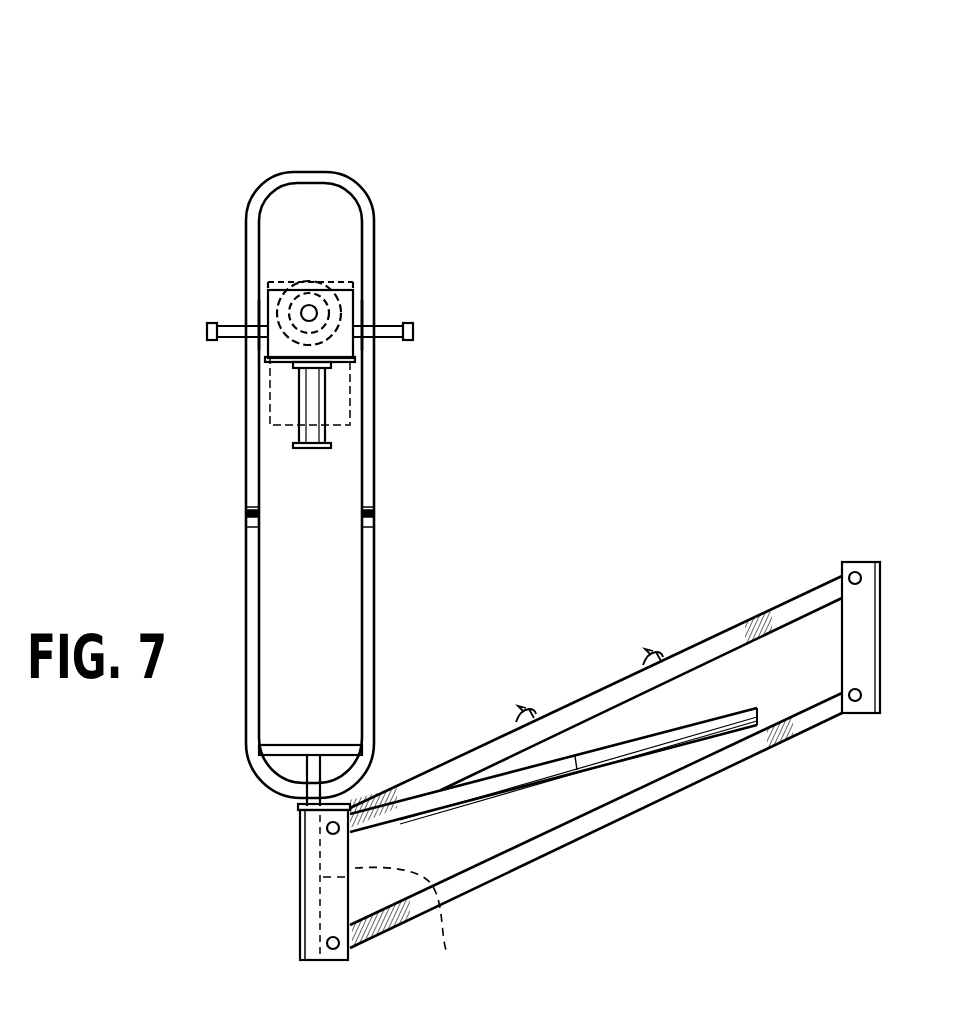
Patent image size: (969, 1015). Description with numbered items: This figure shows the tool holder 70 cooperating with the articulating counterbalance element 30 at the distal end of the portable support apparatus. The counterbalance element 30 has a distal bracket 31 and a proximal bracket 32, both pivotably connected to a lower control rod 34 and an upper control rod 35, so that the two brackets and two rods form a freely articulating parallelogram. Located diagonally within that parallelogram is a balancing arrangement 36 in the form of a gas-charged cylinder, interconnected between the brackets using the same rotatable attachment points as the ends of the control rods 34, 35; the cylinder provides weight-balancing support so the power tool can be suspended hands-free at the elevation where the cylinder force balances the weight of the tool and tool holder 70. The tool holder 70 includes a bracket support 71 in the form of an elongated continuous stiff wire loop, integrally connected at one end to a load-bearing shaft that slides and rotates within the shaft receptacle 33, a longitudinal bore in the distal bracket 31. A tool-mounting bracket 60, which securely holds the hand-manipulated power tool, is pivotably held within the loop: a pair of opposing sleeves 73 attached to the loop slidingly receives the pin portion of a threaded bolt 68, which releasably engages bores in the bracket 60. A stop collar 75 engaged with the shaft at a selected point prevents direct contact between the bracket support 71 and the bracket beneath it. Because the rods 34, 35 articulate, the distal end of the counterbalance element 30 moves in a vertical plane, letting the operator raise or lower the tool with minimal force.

The tool holder 70 is at (328, 143).
The bracket support 71 is at (358, 187).
The tool-mounting bracket 60 is at (272, 441).
The threaded bolt 68 is at (393, 323).
The opposing sleeves 73 is at (377, 350).
The stop collar 75 is at (297, 812).
The distal bracket 31 is at (297, 887).
The shaft receptacle 33 is at (448, 955).
The proximal bracket 32 is at (878, 627).
The upper control rod 35 is at (778, 613).
The counterbalance element 30 is at (615, 664).
The balancing arrangement 36 is at (567, 775).
The lower control rod 34 is at (735, 770).